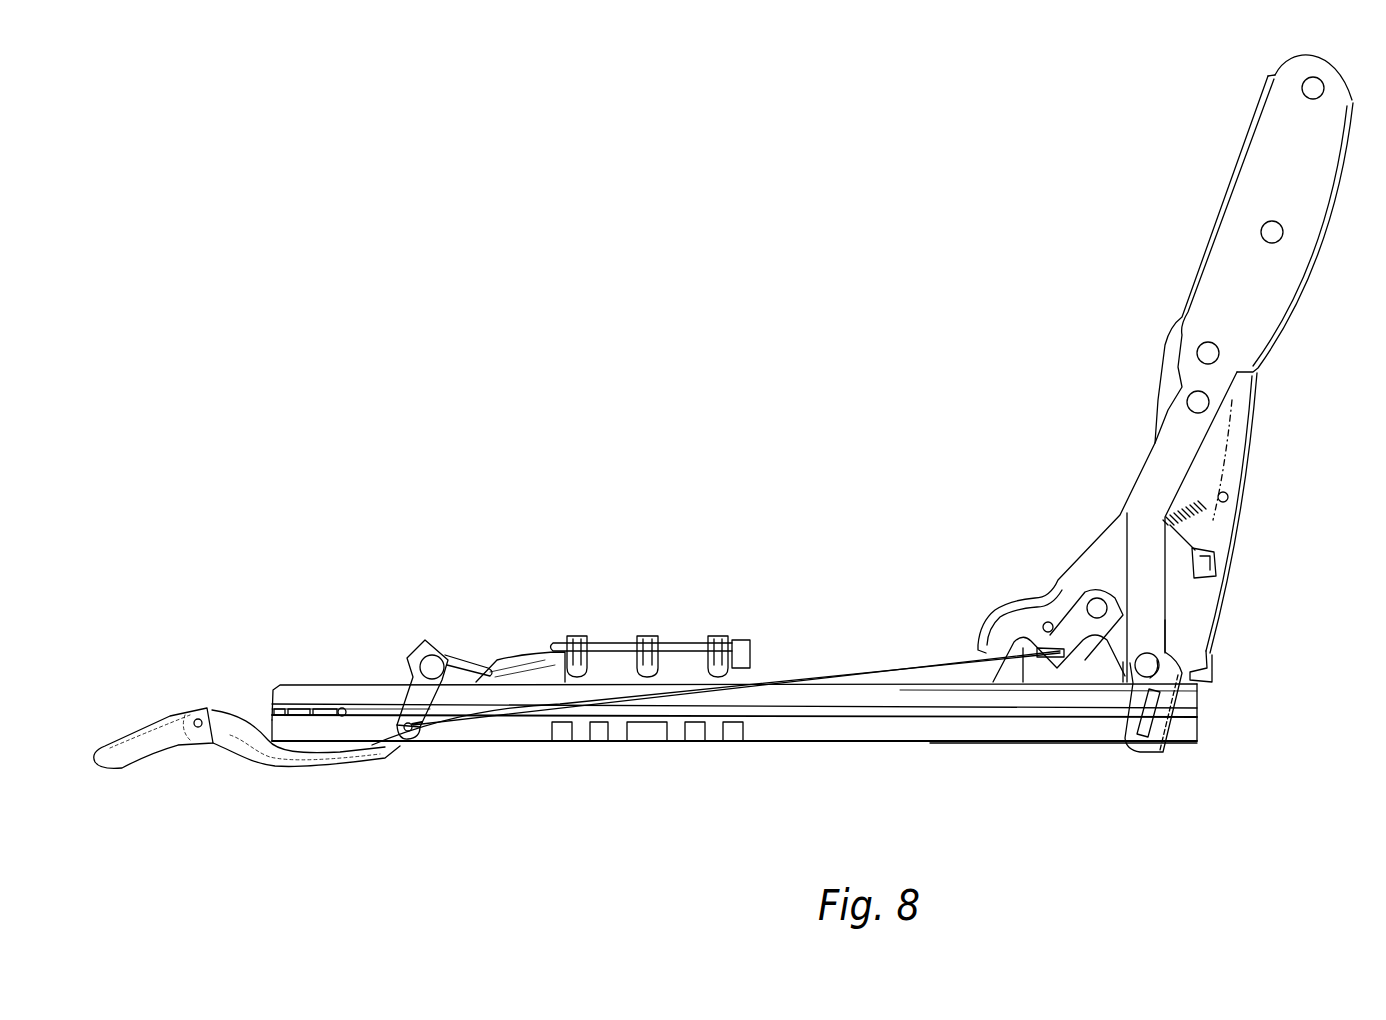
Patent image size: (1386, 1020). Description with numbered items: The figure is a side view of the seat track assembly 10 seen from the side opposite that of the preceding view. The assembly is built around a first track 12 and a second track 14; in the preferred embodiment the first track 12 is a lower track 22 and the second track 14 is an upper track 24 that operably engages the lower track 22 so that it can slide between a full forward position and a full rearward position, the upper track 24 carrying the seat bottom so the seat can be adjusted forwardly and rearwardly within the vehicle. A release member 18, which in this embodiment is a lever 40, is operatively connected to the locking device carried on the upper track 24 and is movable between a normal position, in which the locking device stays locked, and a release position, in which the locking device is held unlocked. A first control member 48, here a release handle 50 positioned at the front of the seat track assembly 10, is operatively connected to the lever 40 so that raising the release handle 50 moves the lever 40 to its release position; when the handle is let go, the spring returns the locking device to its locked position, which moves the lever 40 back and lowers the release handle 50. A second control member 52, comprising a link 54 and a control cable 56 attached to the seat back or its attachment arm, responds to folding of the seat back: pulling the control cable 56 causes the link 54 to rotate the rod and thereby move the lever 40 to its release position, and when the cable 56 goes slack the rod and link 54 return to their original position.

The seat track assembly 10 is at (756, 260).
The first track 12 is at (293, 676).
The second track 14 is at (800, 754).
The release member 18 is at (502, 652).
The lower track 22 is at (330, 691).
The upper track 24 is at (940, 744).
The lever 40 is at (523, 660).
The first control member 48 is at (160, 766).
The release handle 50 is at (185, 745).
The second control member 52 is at (424, 757).
The link 54 is at (413, 745).
The control cable 56 is at (612, 706).